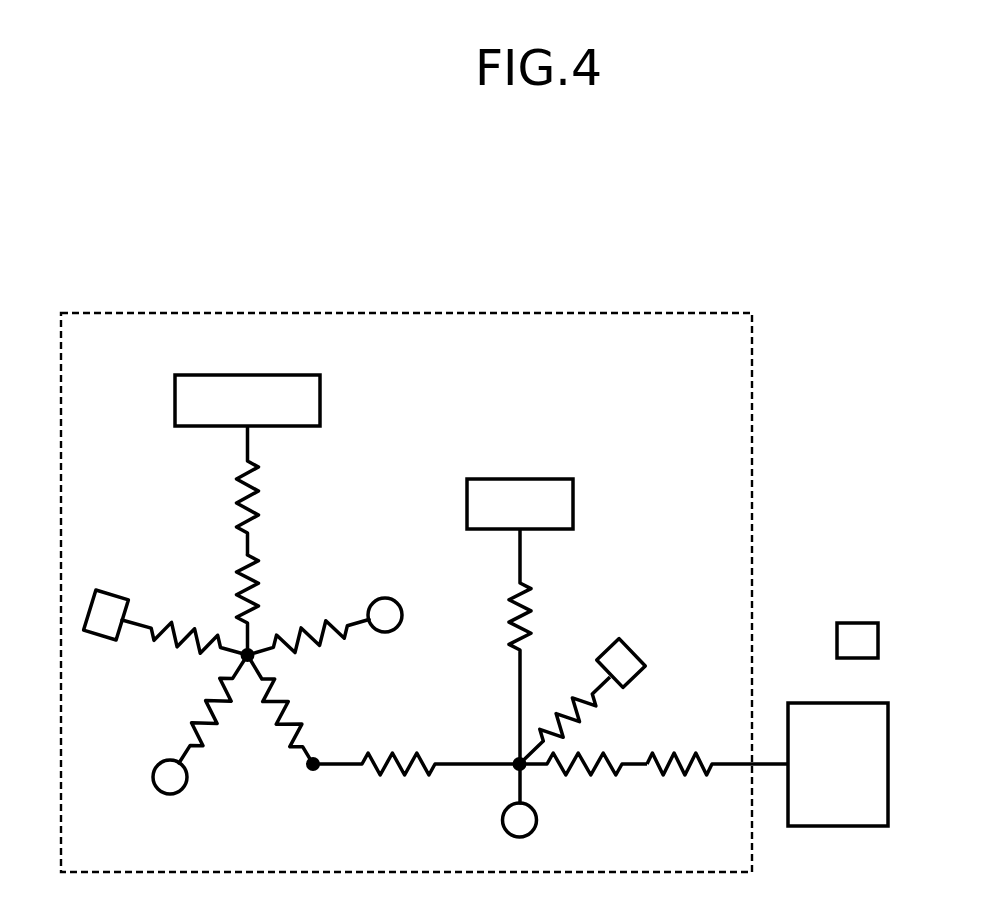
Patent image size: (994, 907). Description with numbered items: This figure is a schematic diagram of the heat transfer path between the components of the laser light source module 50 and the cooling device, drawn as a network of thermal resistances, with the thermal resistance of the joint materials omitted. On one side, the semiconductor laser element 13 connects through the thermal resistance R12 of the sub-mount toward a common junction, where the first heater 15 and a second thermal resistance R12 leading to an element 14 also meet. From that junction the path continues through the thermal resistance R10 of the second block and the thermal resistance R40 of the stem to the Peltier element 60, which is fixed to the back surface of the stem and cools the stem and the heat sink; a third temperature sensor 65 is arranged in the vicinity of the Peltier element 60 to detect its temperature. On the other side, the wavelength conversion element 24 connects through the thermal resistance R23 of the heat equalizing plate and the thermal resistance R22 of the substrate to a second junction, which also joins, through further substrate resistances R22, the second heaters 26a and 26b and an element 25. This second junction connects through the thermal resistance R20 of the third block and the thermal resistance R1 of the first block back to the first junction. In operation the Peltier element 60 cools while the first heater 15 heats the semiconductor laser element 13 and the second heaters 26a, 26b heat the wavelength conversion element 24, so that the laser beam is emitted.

The laser light source module 50 is at (620, 310).
The wavelength conversion element 24 is at (261, 375).
The semiconductor laser element 13 is at (543, 462).
The Peltier element 60 is at (825, 827).
The third temperature sensor 65 is at (872, 606).
The heater element 25 is at (108, 590).
The heater element 14 is at (636, 650).
The second heater 26a is at (398, 605).
The second heater 26b is at (184, 789).
The first heater 15 is at (536, 821).
The thermal resistance of the heat equalizing plate R23 is at (236, 490).
The thermal resistance of the substrate R22 is at (236, 587).
The thermal resistance of the third block R20 is at (290, 712).
The thermal resistance of the first block R1 is at (402, 753).
The thermal resistance of the sub-mount R12 is at (560, 708).
The thermal resistance of the second block R10 is at (603, 774).
The thermal resistance of the stem R40 is at (686, 753).